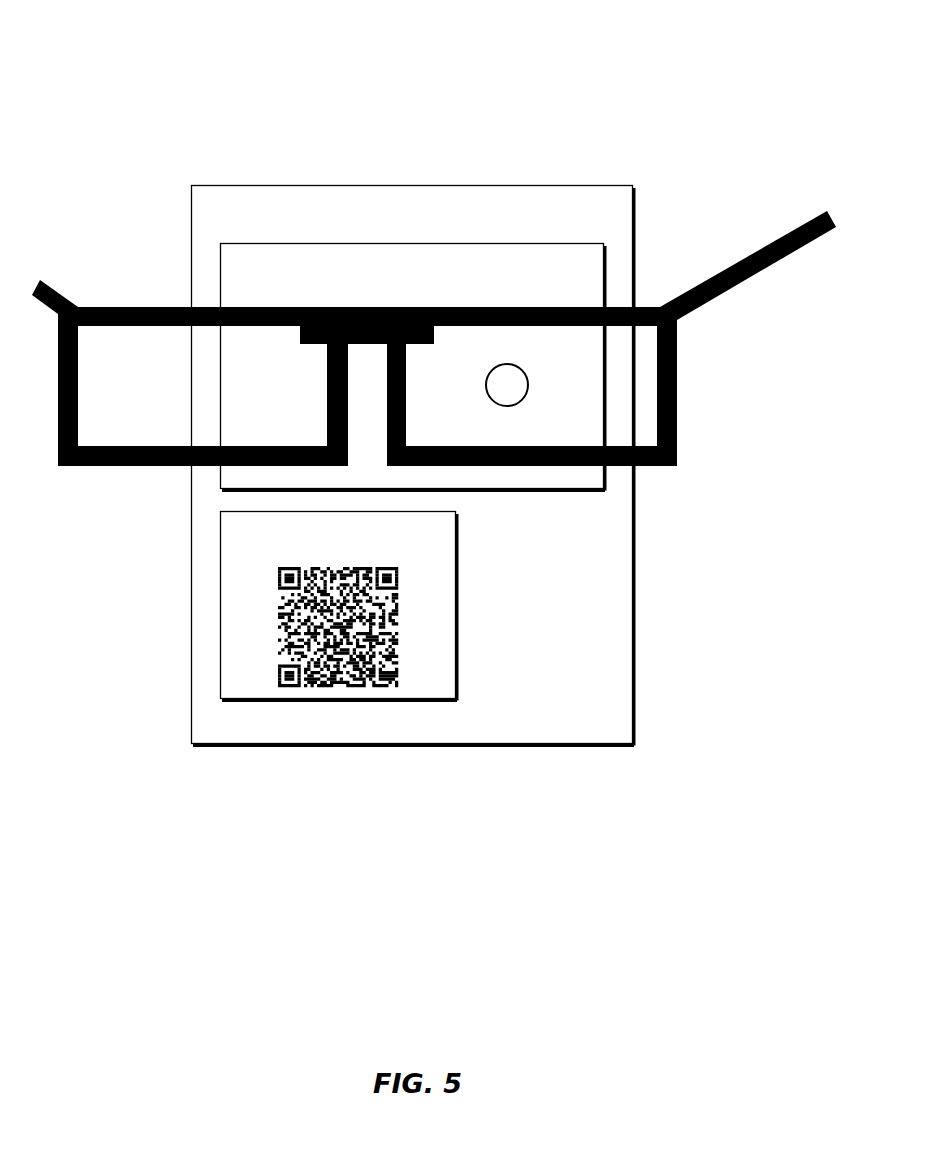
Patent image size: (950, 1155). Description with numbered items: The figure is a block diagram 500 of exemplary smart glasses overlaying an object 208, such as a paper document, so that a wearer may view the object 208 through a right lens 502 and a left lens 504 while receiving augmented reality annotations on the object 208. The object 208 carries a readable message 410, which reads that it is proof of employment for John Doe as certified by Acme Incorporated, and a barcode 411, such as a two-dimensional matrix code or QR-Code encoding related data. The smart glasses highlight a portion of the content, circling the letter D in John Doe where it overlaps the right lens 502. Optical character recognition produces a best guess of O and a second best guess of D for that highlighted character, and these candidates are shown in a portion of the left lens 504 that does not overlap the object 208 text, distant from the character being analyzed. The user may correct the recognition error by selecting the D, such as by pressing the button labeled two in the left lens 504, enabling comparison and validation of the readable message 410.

The block diagram 500 is at (95, 68).
The object 208 is at (398, 228).
The readable message 410 is at (396, 287).
The barcode 411 is at (322, 554).
The right lens 502 is at (675, 390).
The left lens 504 is at (87, 466).